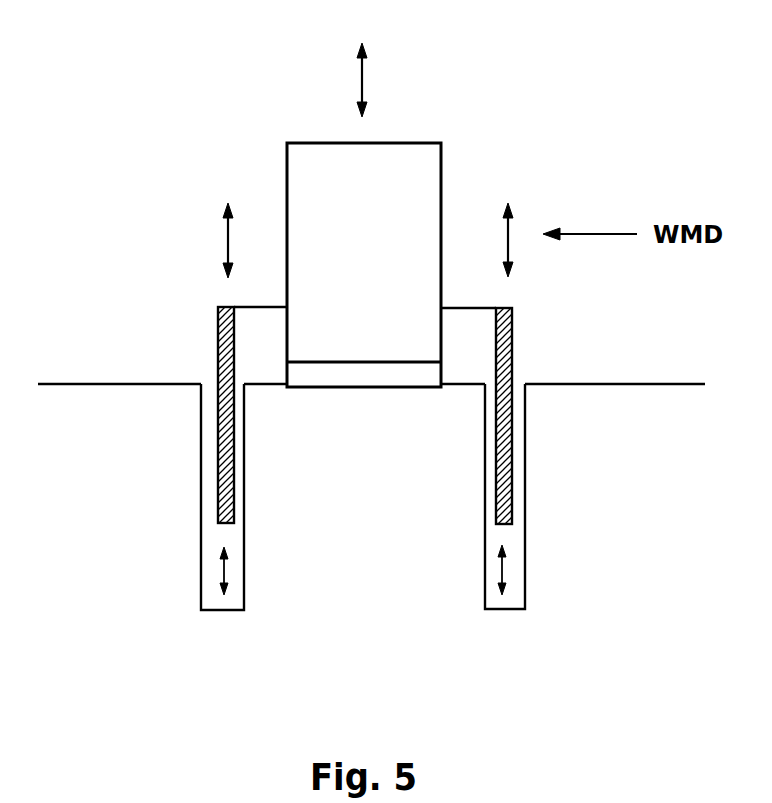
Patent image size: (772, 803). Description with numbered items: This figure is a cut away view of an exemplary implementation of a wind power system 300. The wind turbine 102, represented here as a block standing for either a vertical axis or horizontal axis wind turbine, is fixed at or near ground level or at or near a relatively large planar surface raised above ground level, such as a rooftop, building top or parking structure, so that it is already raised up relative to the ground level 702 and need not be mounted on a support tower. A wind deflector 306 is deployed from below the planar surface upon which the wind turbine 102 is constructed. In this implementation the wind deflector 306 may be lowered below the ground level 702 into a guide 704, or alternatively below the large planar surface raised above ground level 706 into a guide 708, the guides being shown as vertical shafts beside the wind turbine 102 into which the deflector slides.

The wind power system 300 is at (268, 110).
The wind turbine 102 is at (441, 165).
The wind deflector 306 is at (513, 344).
The ground level 702 is at (110, 384).
The large planar surface raised above ground level 706 is at (650, 384).
The guide 704 is at (201, 455).
The guide 708 is at (526, 465).